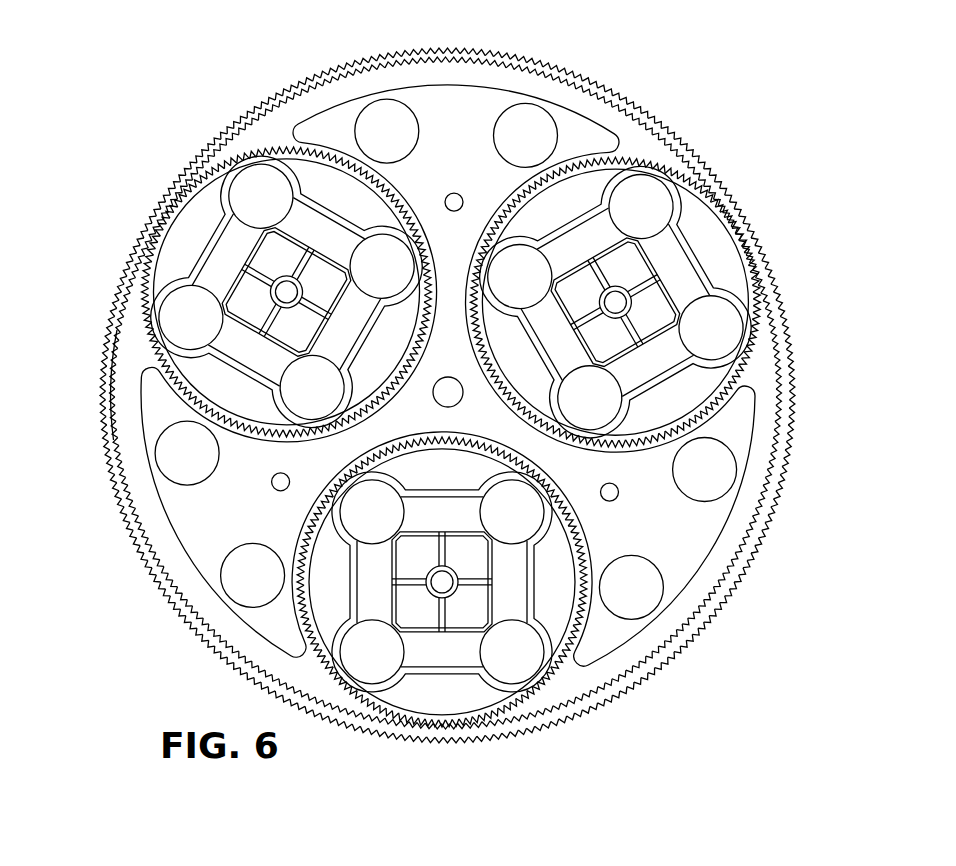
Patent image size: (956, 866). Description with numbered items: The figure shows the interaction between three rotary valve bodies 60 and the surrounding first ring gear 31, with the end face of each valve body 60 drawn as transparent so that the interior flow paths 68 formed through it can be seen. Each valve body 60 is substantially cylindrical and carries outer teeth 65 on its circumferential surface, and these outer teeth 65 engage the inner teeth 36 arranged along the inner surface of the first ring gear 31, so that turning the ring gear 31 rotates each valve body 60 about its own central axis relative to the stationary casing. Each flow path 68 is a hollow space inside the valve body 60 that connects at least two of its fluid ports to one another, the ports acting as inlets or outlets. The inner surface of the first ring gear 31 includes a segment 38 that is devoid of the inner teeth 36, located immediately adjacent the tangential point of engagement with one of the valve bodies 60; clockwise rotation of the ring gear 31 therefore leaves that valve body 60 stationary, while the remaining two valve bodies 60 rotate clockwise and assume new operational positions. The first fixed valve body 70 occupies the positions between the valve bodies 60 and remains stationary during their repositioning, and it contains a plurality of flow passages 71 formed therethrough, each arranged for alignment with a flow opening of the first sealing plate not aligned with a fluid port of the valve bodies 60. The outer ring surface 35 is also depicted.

The first ring gear 31 is at (708, 156).
The ring gear outer teeth 35 is at (110, 318).
The inner teeth 36 is at (128, 475).
The segment 38 is at (112, 394).
The valve body 60 is at (233, 173).
The outer teeth 65 is at (152, 258).
The flow path 68 is at (178, 330).
The first fixed valve body 70 is at (455, 98).
The flow passages 71 is at (355, 137).